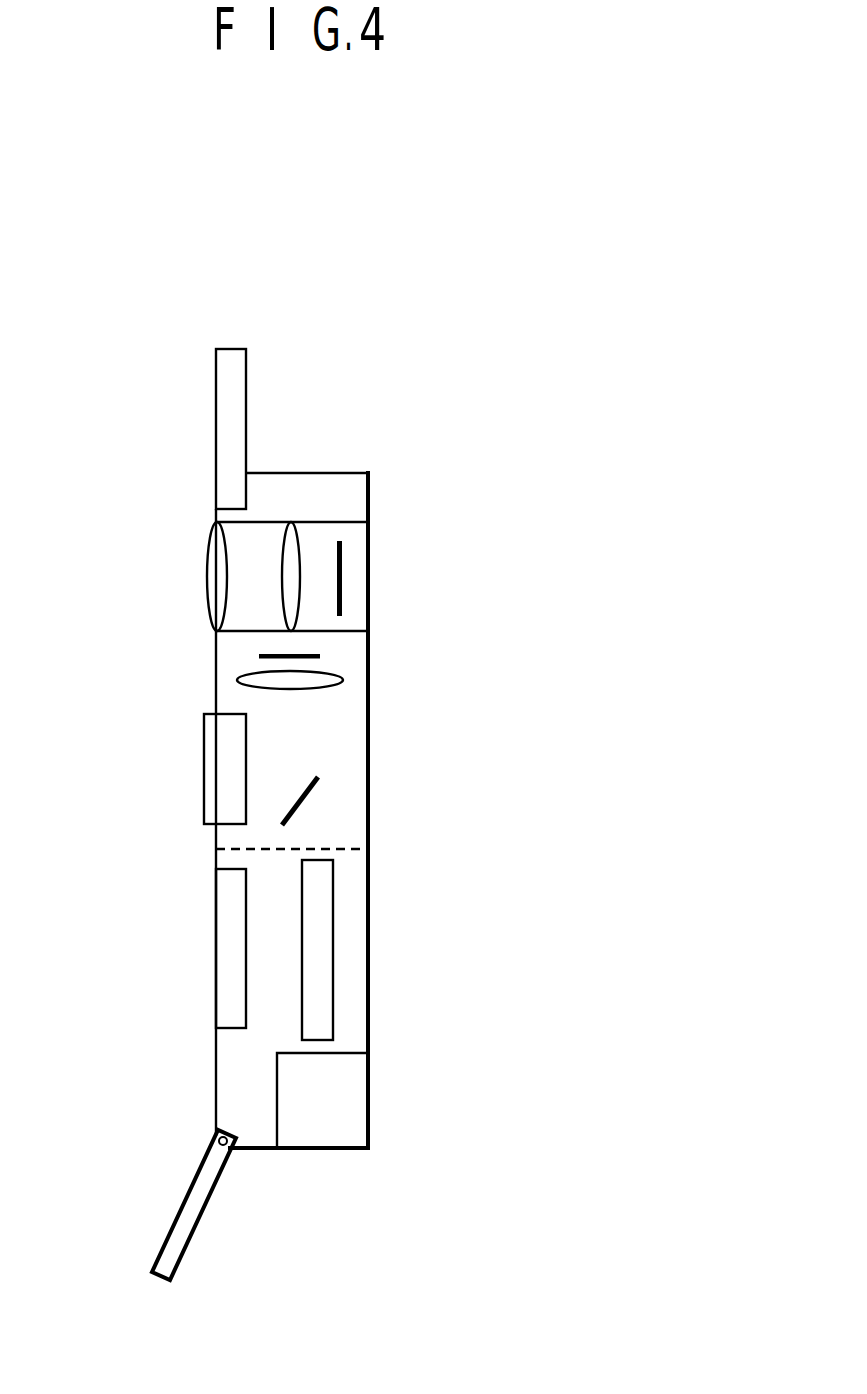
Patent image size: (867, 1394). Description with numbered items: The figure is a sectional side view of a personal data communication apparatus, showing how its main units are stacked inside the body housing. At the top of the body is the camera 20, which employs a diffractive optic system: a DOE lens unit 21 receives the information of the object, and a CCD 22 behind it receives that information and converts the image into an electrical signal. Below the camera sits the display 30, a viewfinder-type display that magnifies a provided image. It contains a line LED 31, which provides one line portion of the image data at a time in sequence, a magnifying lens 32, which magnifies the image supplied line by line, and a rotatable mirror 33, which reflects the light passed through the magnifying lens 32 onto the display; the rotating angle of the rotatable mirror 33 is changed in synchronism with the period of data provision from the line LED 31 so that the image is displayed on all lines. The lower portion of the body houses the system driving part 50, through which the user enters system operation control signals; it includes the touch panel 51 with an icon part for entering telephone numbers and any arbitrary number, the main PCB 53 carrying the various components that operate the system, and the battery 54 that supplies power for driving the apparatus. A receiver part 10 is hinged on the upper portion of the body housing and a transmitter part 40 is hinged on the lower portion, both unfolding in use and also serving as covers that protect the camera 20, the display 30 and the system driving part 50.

The receiver part 10 is at (196, 427).
The camera 20 is at (192, 578).
The DOE lens unit 21 is at (302, 544).
The CCD 22 is at (342, 568).
The display 30 is at (183, 766).
The line LED 31 is at (320, 657).
The magnifying lens 32 is at (343, 680).
The rotatable mirror 33 is at (303, 793).
The transmitter part 40 is at (166, 1195).
The system driving part 50 is at (153, 948).
The touch panel 51 is at (217, 912).
The main PCB 53 is at (313, 957).
The battery 54 is at (352, 1093).